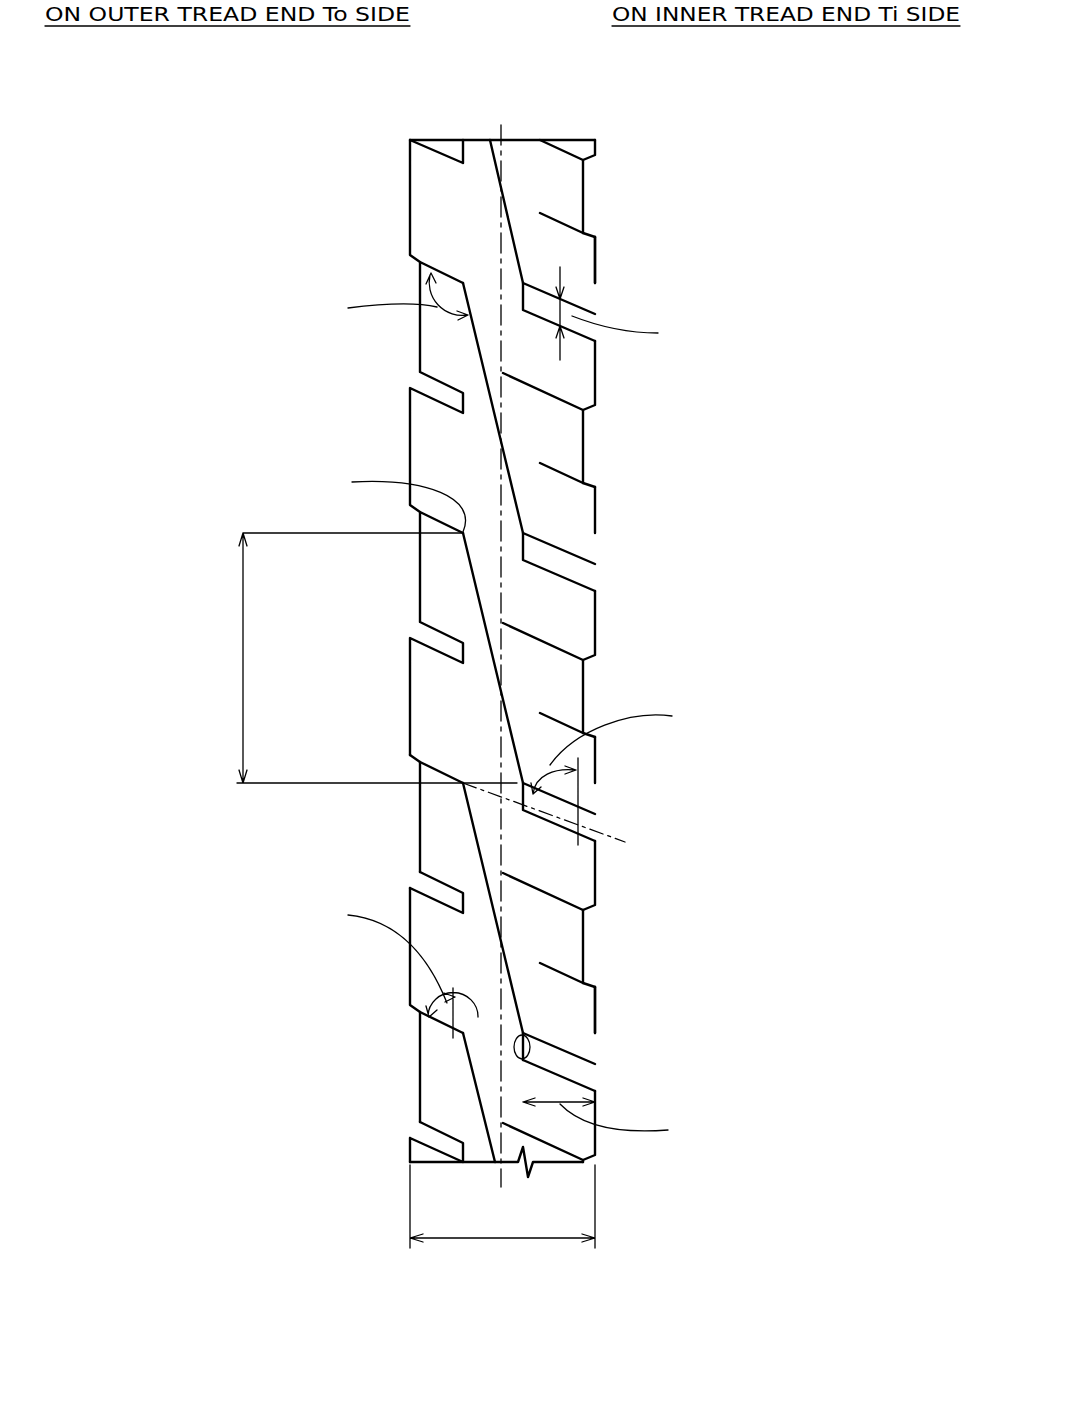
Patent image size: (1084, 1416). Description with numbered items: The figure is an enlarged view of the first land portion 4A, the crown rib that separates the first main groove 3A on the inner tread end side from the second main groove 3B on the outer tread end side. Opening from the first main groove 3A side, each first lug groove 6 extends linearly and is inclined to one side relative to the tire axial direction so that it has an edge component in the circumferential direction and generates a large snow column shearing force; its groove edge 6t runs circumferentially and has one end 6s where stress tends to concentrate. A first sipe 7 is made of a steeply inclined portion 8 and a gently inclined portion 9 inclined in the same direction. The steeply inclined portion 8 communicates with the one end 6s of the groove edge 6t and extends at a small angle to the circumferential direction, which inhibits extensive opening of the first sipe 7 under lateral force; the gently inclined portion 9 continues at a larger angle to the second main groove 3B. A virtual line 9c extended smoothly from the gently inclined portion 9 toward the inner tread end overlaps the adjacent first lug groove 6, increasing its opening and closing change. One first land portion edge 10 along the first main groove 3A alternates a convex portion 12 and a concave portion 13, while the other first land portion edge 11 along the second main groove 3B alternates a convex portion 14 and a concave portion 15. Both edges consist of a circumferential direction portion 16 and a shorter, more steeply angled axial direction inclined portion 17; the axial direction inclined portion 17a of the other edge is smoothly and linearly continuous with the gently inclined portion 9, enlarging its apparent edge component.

The first land portion 4A is at (441, 171).
The second main groove 3B is at (323, 409).
The first main groove 3A is at (653, 409).
The first sipe 7 is at (495, 67).
The steeply inclined portion 8 is at (481, 340).
The gently inclined portion 9 is at (443, 268).
The virtual line 9c is at (510, 800).
The first lug groove 6 is at (553, 562).
The one end 6s is at (523, 1033).
The groove edge 6t is at (530, 1057).
The axial direction inclined portion 17 is at (593, 237).
The axial direction inclined portion 17a is at (413, 762).
The circumferential direction portion 16 is at (596, 270).
The one first land portion edge 10 is at (712, 940).
The convex portion 12 is at (596, 1028).
The concave portion 13 is at (584, 960).
The another first land portion edge 11 is at (315, 958).
The convex portion 14 is at (410, 962).
The concave portion 15 is at (420, 1065).